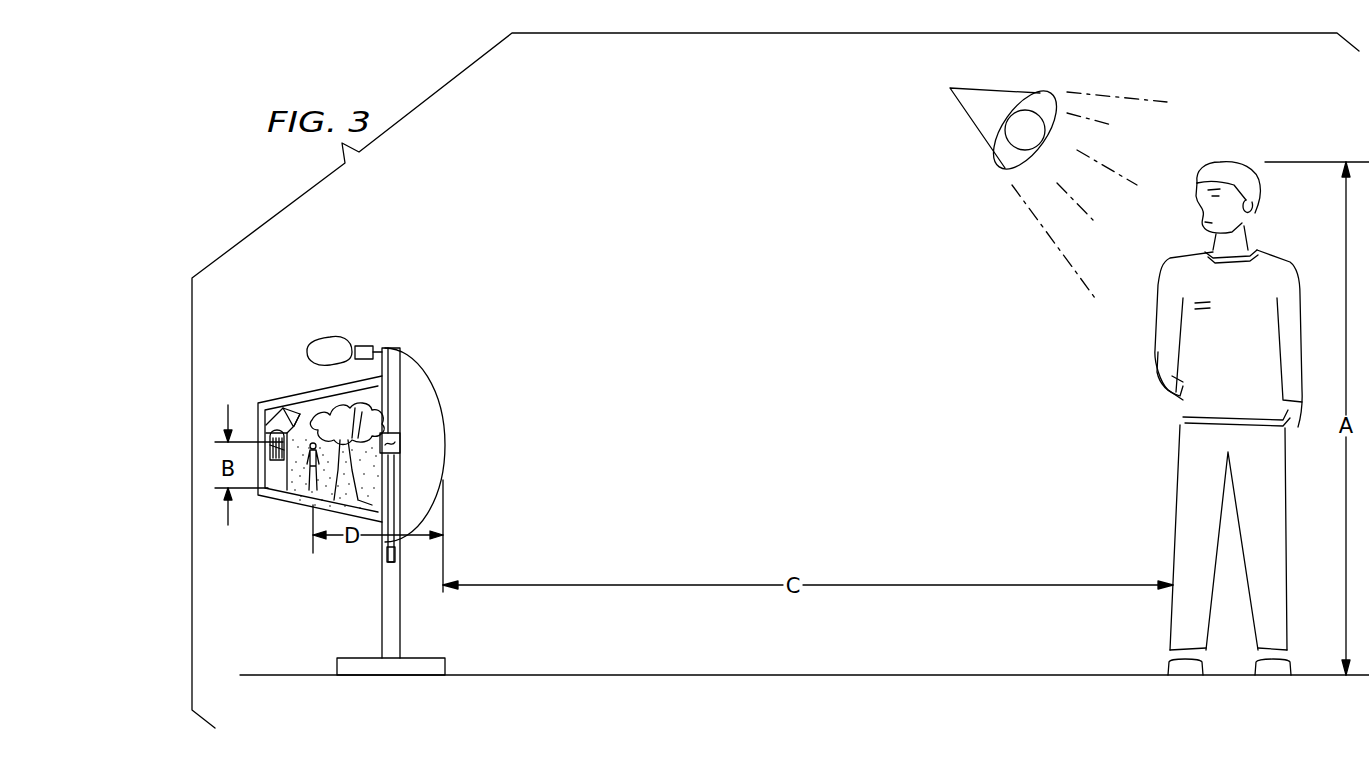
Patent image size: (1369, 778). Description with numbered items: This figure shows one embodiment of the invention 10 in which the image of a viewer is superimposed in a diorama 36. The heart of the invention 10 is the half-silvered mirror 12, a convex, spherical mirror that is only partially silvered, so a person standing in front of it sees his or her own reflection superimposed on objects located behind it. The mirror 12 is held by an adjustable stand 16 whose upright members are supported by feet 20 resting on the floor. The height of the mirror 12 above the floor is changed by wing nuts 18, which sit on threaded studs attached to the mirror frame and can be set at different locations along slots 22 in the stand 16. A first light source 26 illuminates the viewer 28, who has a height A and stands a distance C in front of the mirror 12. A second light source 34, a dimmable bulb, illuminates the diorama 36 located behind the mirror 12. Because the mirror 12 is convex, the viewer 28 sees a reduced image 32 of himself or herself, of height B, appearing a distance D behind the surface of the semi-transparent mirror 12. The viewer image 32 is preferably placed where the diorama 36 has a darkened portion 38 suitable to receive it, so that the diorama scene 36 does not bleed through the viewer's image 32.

The invention 10 is at (500, 152).
The half-silvered mirror 12 is at (418, 378).
The adjustable stand 16 is at (398, 606).
The wing nuts 18 is at (402, 446).
The feet 20 is at (434, 657).
The slots 22 is at (386, 554).
The first light source 26 is at (955, 87).
The viewer 28 is at (1247, 161).
The viewer image 32 is at (312, 498).
The second light source 34 is at (326, 340).
The diorama 36 is at (272, 400).
The darkened portion 38 is at (318, 437).